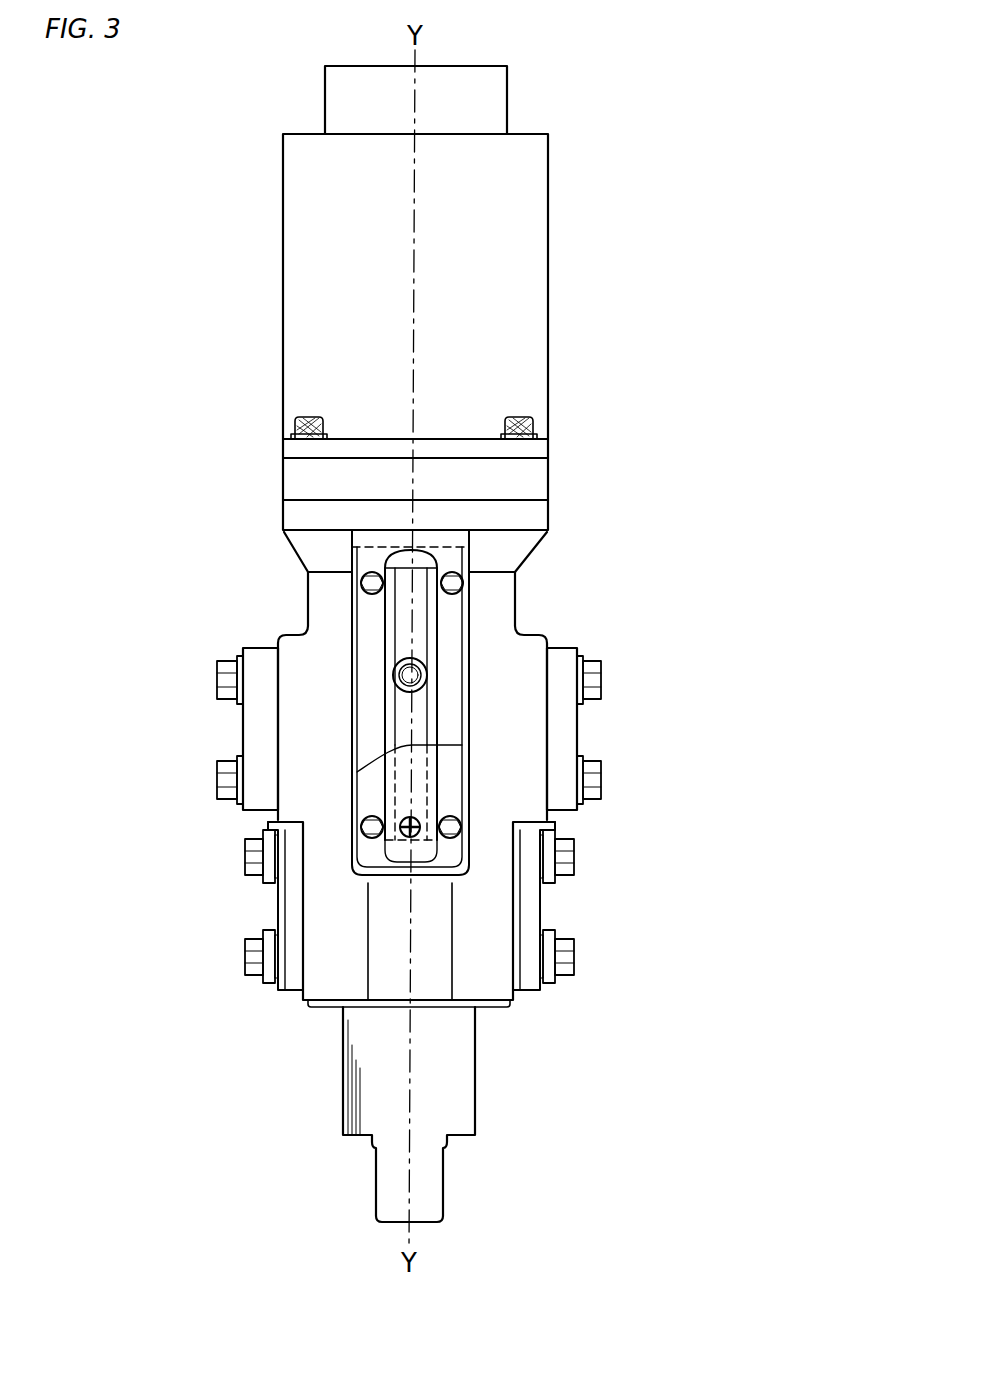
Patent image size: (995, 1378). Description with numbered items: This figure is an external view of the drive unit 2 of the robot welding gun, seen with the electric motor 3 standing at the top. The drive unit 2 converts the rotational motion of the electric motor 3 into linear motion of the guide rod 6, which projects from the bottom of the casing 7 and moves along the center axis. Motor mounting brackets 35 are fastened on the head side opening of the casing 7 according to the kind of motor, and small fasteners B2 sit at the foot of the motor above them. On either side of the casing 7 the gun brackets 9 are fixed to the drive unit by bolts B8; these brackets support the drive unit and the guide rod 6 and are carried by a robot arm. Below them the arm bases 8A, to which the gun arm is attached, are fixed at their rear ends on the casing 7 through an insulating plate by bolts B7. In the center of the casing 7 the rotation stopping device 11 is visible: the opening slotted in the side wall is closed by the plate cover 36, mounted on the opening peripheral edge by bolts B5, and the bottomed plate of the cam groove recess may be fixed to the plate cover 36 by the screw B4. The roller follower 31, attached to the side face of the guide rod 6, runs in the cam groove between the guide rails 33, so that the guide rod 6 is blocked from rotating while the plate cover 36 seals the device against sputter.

The drive unit 2 is at (257, 375).
The electric motor 3 is at (540, 344).
The bolt B2 is at (530, 418).
The motor mounting bracket 35 is at (533, 475).
The plate cover 36 is at (520, 548).
The rotation stopping device 11 is at (645, 512).
The guide rail 33 is at (390, 638).
The roller follower 31 is at (427, 662).
The bolt B5 is at (372, 586).
The casing 7 is at (307, 662).
The gun bracket 9 is at (258, 720).
The bolt B8 is at (222, 778).
The screw B4 is at (420, 825).
The arm base 8A is at (296, 892).
The bolt B7 is at (245, 958).
The guide rod 6 is at (463, 1070).